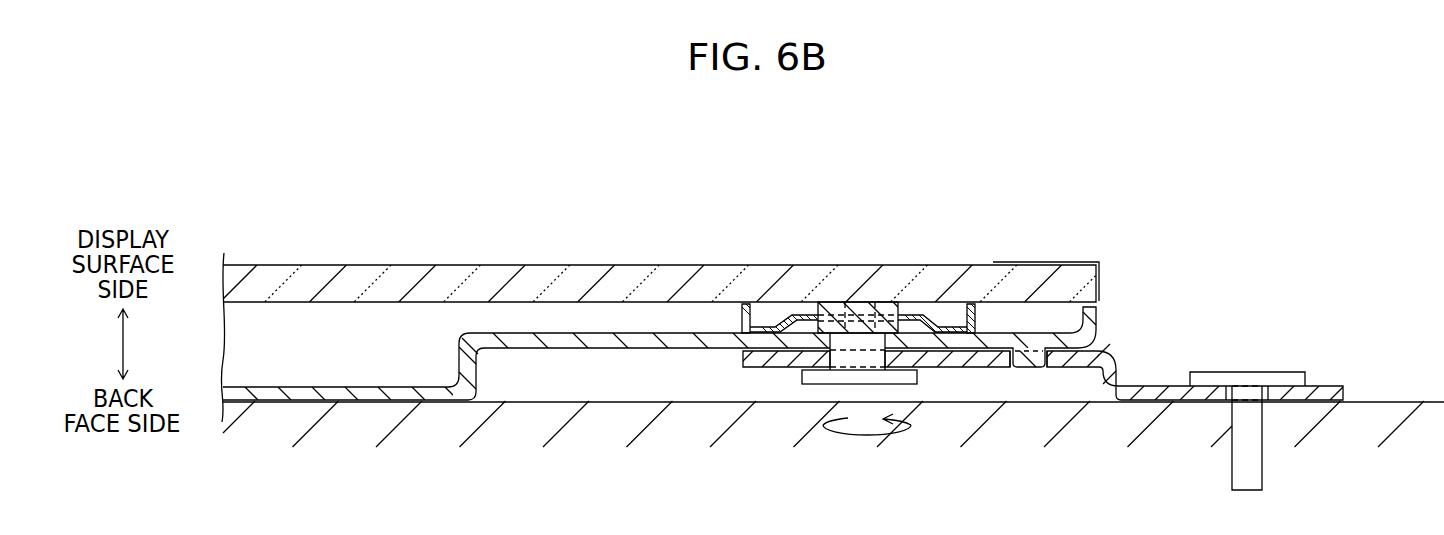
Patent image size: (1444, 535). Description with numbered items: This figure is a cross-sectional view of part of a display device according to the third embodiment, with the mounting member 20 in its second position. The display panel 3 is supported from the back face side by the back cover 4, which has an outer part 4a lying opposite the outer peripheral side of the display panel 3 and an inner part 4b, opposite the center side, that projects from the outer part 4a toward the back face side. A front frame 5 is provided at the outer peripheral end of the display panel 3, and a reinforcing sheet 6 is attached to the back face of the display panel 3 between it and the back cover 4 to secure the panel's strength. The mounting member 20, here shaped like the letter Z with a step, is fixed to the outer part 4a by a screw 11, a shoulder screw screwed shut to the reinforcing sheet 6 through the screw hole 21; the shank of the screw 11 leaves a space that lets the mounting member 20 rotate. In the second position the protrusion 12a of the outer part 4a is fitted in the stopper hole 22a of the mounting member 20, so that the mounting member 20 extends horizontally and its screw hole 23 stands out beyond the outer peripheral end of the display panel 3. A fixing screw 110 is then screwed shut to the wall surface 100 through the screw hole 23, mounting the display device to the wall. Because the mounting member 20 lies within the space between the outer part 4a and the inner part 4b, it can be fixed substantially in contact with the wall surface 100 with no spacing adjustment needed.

The display panel 3 is at (553, 263).
The back cover 4 is at (698, 397).
The outer part 4a is at (615, 348).
The inner part 4b is at (392, 402).
The front frame 5 is at (1043, 260).
The reinforcing sheet 6 is at (917, 308).
The screw 11 is at (903, 385).
The protrusion 12a is at (1032, 368).
The mounting member 20 is at (1165, 385).
The screw hole 21 is at (829, 366).
The stopper hole 22a is at (1057, 374).
The screw hole 23 is at (1277, 409).
The wall surface 100 is at (1398, 400).
The fixing screw 110 is at (1247, 370).